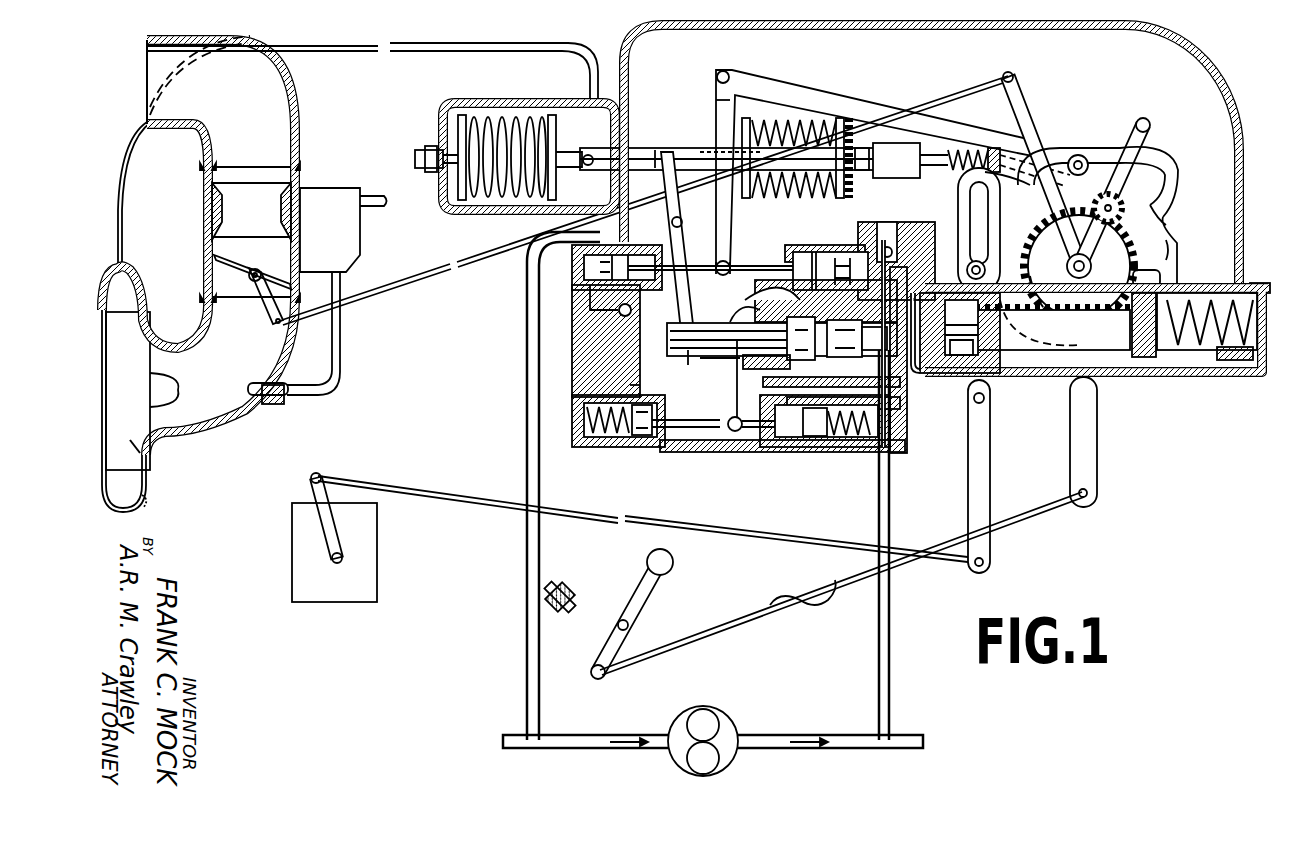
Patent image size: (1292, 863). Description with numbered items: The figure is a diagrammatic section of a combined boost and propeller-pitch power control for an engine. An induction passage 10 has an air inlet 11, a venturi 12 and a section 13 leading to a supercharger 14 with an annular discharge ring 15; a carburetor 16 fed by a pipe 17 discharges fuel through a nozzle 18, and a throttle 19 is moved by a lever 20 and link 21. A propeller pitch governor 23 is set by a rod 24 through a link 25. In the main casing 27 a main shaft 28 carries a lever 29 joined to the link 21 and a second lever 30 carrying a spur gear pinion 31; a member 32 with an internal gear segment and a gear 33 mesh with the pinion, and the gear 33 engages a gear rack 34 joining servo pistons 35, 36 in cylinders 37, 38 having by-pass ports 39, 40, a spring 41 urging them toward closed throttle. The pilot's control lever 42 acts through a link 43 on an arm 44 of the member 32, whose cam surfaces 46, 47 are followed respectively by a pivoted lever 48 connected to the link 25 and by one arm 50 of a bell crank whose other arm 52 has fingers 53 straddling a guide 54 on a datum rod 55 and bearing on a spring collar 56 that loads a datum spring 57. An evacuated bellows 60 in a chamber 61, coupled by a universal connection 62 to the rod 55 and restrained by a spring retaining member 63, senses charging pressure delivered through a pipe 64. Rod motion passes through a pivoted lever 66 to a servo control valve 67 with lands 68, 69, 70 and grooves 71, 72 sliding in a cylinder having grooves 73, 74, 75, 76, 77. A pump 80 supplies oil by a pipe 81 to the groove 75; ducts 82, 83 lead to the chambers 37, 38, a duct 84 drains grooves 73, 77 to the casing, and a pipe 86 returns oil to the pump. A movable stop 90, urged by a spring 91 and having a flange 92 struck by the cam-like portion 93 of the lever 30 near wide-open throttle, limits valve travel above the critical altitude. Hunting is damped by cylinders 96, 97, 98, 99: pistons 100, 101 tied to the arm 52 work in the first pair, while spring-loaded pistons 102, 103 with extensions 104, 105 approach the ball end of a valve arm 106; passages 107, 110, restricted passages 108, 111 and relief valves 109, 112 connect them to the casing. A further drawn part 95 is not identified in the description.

The induction passage 10 is at (218, 252).
The air inlet 11 is at (178, 110).
The venturi 12 is at (210, 210).
The section 13 is at (218, 410).
The supercharger 14 is at (150, 460).
The annular discharge ring 15 is at (130, 520).
The carburetor 16 is at (340, 242).
The pipe 17 is at (380, 199).
The nozzle 18 is at (262, 382).
The throttle 19 is at (235, 261).
The lever 20 is at (265, 307).
The link 21 is at (385, 296).
The propeller pitch governor 23 is at (305, 558).
The rod or lever 24 is at (316, 489).
The link 25 is at (411, 491).
The main casing 27 is at (1167, 47).
The main shaft 28 is at (1113, 263).
The lever 29 is at (1028, 116).
The second lever 30 is at (1173, 158).
The spur gear pinion 31 is at (1140, 217).
The member 32 is at (1166, 220).
The gear 33 is at (1168, 246).
The gear rack 34 is at (1108, 330).
The servo-motor piston 35 is at (960, 373).
The servo-motor piston 36 is at (1150, 357).
The cylinder 37 is at (945, 373).
The cylinder 38 is at (1203, 352).
The oil by-pass port 39 is at (972, 347).
The oil by-pass port 40 is at (1160, 275).
The spring 41 is at (1260, 286).
The control lever 42 is at (645, 600).
The link 43 is at (810, 612).
The arm 44 is at (1097, 440).
The cam surface 46 is at (972, 216).
The cam surface 47 is at (1103, 162).
The pivoted lever 48 is at (990, 472).
The arm 50 is at (815, 98).
The arm 52 is at (716, 108).
The fingers 53 is at (712, 146).
The cylindrical guide 54 is at (647, 150).
The datum rod 55 is at (657, 148).
The spring collar 56 is at (746, 198).
The boost control datum spring 57 is at (797, 195).
The sealed evacuated corrugated bellows 60 is at (497, 118).
The chamber 61 is at (457, 115).
The universal connection 62 is at (587, 157).
The spring retaining member 63 is at (853, 187).
The pressure transmitting pipe 64 is at (431, 50).
The pivoted lever 66 is at (678, 242).
The servo-motor control valve 67 is at (717, 345).
The land 68 is at (775, 338).
The land 69 is at (801, 338).
The land 70 is at (857, 338).
The groove 71 is at (790, 397).
The groove 72 is at (912, 413).
The groove 73 is at (760, 313).
The groove 74 is at (765, 305).
The groove 75 is at (743, 290).
The groove 76 is at (838, 271).
The groove 77 is at (960, 258).
The pump 80 is at (725, 728).
The pipe 81 is at (890, 650).
The duct 82 is at (959, 268).
The duct 83 is at (1023, 378).
The duct 84 is at (766, 376).
The pipe 86 is at (540, 488).
The movable stop 90 is at (890, 143).
The spring 91 is at (972, 148).
The flange 92 is at (996, 150).
The rounded cam-like portion 93 is at (1134, 142).
The adjusting screw 95 is at (569, 582).
The cylinder 96 is at (590, 275).
The cylinder 97 is at (843, 250).
The cylinder 98 is at (614, 447).
The cylinder 99 is at (850, 443).
The piston 100 is at (630, 255).
The piston 101 is at (813, 255).
The spring loaded piston 102 is at (643, 443).
The spring loaded piston 103 is at (815, 437).
The rod-like extension 104 is at (687, 419).
The rod-like extension 105 is at (777, 432).
The arm 106 is at (730, 432).
The passage 107 is at (573, 333).
The restricted passage 108 is at (633, 387).
The spring-loaded pressure relief valve 109 is at (632, 312).
The passage 110 is at (912, 440).
The restricted connection 111 is at (788, 413).
The spring-loaded pressure relief valve 112 is at (880, 220).